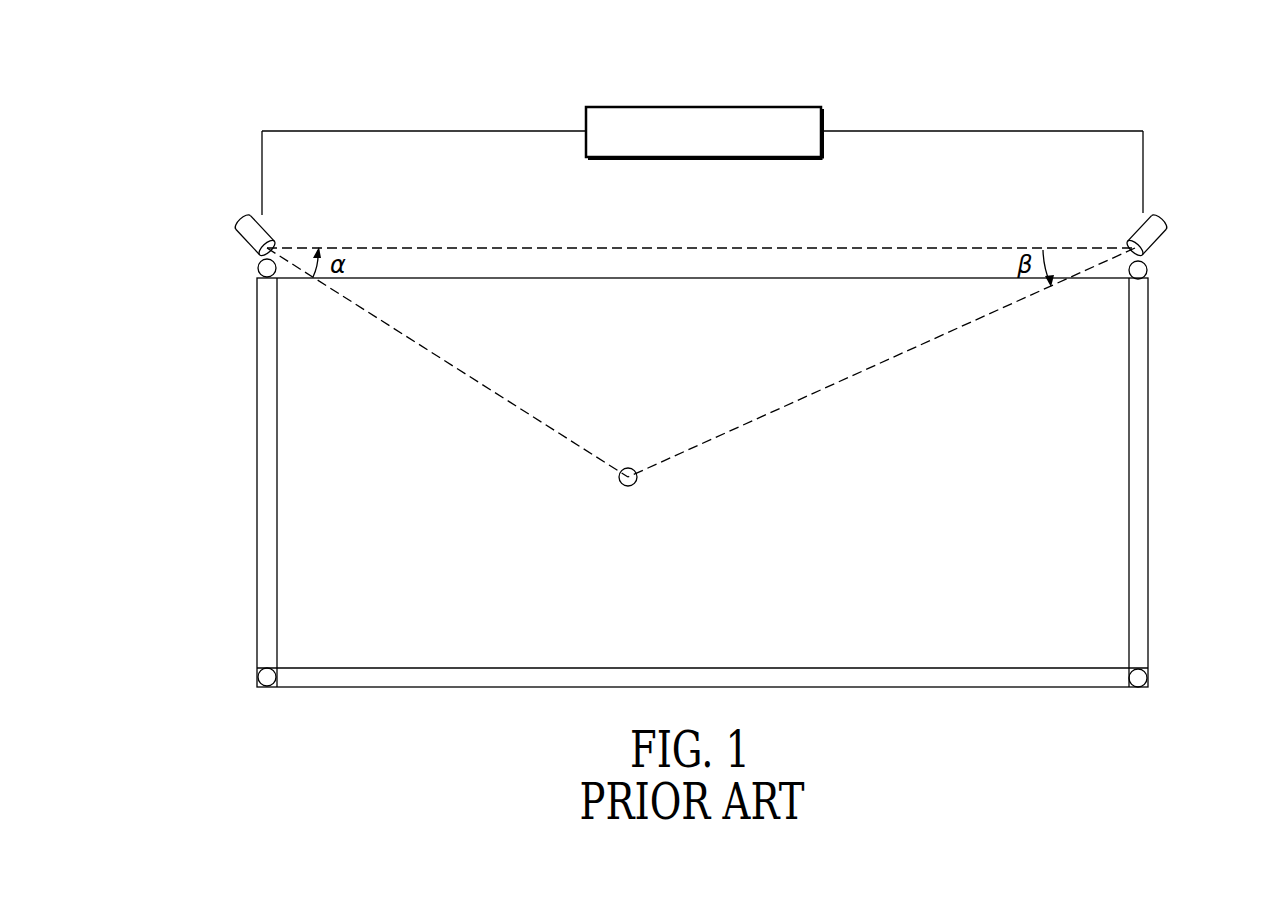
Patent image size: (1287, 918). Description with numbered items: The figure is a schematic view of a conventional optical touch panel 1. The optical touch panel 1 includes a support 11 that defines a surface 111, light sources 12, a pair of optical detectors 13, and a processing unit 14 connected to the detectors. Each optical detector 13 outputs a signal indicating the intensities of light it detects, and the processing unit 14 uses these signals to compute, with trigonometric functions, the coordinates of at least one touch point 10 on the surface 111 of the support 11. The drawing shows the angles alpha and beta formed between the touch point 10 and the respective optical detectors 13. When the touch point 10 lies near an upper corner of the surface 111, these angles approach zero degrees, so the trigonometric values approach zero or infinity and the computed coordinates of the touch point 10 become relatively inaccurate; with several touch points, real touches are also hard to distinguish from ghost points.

The optical touch panel 1 is at (227, 133).
The touch point 10 is at (618, 487).
The support 11 is at (582, 278).
The surface 111 is at (1078, 423).
The light sources 12 is at (258, 267).
The optical detectors 13 is at (250, 230).
The processing unit 14 is at (700, 107).